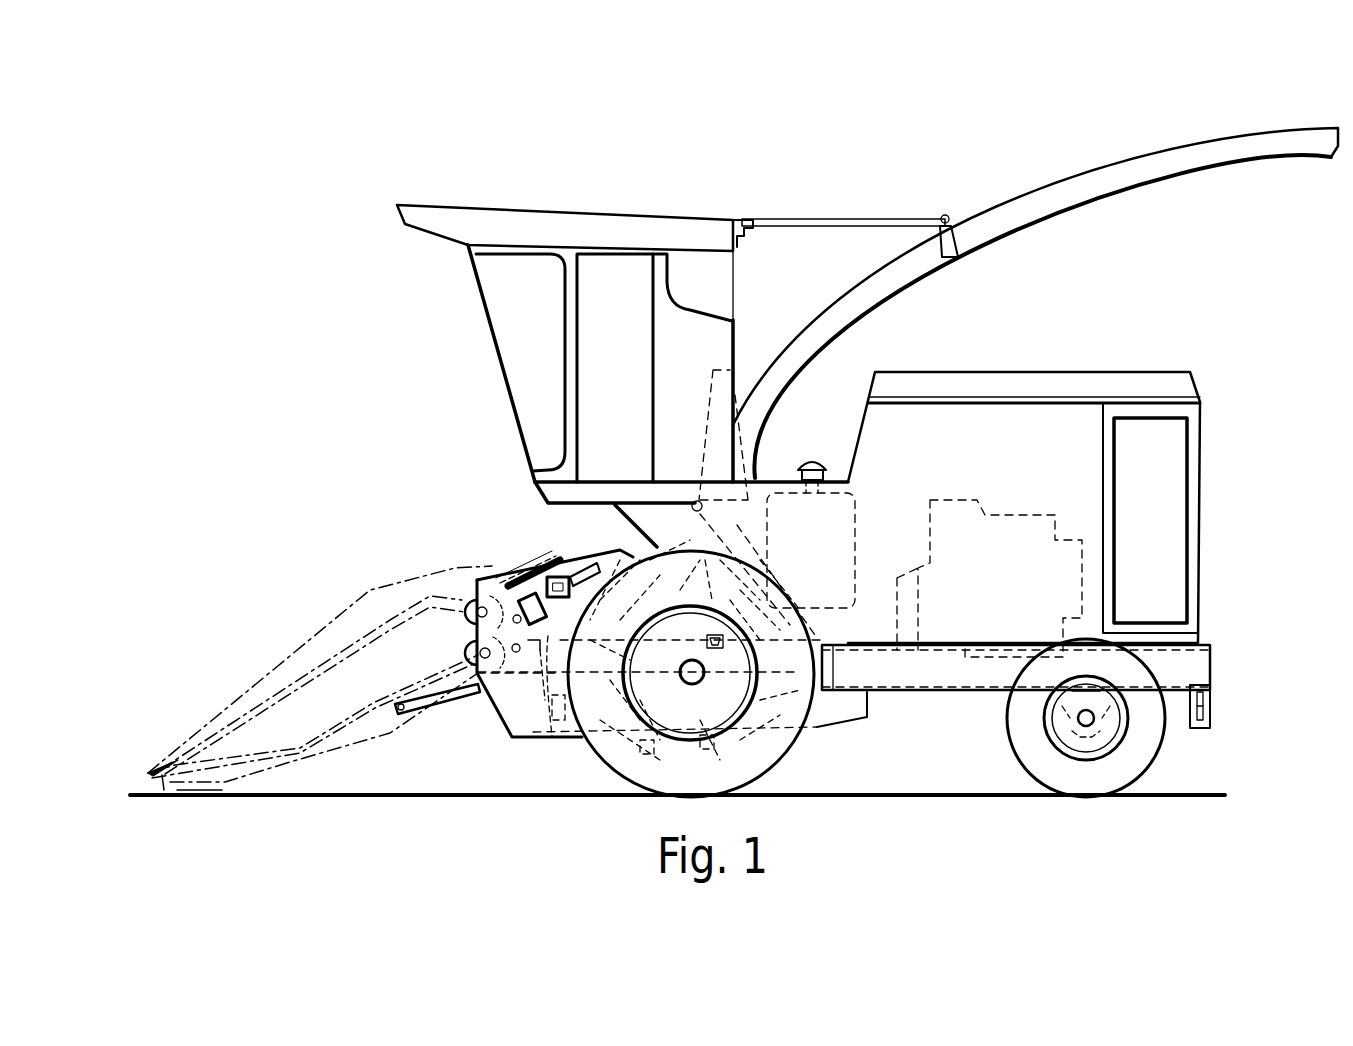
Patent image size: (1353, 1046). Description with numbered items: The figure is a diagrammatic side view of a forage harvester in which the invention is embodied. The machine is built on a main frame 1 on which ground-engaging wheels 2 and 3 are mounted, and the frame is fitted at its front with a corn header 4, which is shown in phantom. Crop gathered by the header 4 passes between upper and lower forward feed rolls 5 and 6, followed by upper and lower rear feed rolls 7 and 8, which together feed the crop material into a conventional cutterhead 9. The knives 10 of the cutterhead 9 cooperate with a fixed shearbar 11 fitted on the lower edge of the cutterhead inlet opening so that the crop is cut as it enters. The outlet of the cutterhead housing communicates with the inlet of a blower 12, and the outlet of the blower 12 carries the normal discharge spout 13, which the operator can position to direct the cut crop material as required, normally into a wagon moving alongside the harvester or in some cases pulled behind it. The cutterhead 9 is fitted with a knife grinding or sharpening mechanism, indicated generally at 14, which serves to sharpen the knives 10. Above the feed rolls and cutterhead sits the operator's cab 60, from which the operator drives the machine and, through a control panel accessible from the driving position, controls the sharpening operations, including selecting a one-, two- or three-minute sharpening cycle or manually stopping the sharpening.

The main frame 1 is at (931, 682).
The ground-engaging wheel 2 is at (773, 755).
The ground-engaging wheel 3 is at (1025, 753).
The corn header 4 is at (278, 650).
The upper forward feed roll 5 is at (462, 630).
The lower forward feed roll 6 is at (462, 676).
The upper rear feed roll 7 is at (515, 608).
The lower rear feed roll 8 is at (515, 660).
The cutterhead 9 is at (627, 615).
The knives 10 is at (547, 636).
The shearbar 11 is at (549, 637).
The blower 12 is at (680, 687).
The discharge spout 13 is at (1027, 222).
The knife grinding or sharpening mechanism 14 is at (525, 541).
The operator's cab 60 is at (513, 224).